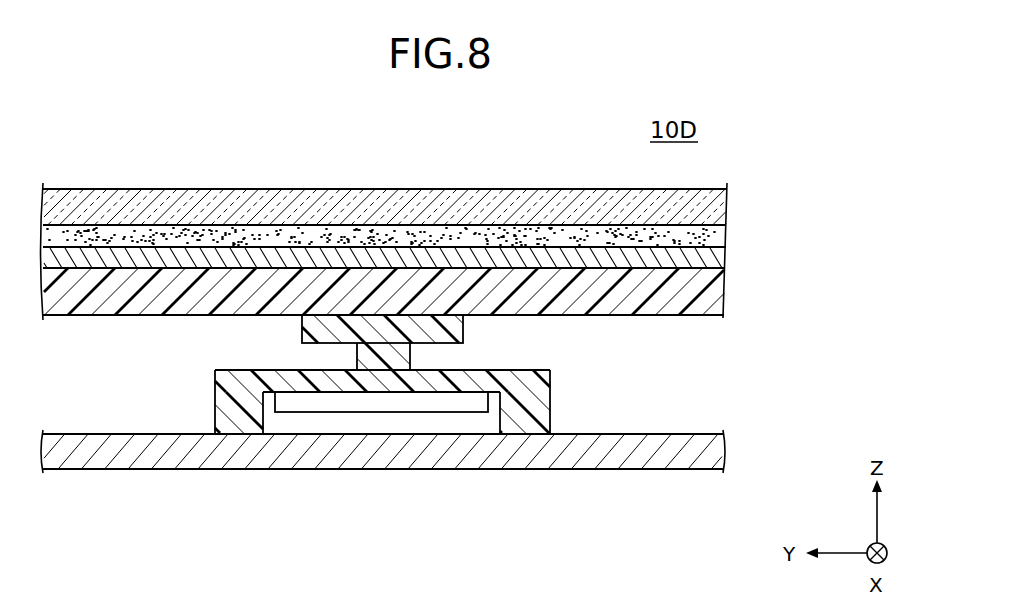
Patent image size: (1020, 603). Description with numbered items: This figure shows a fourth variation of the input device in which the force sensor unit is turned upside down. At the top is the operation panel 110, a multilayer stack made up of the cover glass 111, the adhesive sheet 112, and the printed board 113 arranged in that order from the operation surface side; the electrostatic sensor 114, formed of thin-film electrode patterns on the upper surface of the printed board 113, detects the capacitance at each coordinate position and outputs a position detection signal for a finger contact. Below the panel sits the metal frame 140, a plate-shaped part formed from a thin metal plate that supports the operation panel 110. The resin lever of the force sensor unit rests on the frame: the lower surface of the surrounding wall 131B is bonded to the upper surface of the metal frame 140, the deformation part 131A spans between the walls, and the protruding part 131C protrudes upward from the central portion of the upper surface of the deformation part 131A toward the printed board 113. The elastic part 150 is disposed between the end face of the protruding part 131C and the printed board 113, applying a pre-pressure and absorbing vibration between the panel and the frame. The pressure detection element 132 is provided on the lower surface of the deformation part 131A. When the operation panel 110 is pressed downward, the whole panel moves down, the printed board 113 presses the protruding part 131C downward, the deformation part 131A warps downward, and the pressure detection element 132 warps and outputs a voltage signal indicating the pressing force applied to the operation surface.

The operation panel 110 is at (815, 187).
The cover glass 111 is at (720, 205).
The adhesive sheet 112 is at (717, 236).
The electrostatic sensor 114 is at (718, 258).
The printed board 113 is at (715, 290).
The elastic part 150 is at (302, 325).
The deformation part 131A is at (467, 380).
The surrounding wall 131B is at (222, 398).
The protruding part 131C is at (362, 355).
The pressure detection element 132 is at (443, 398).
The metal frame 140 is at (715, 451).